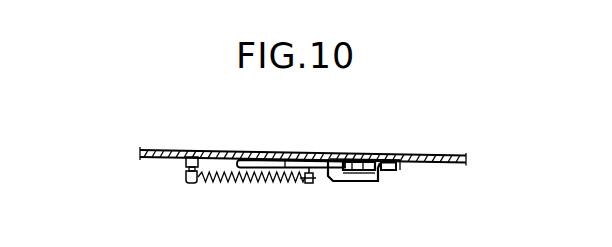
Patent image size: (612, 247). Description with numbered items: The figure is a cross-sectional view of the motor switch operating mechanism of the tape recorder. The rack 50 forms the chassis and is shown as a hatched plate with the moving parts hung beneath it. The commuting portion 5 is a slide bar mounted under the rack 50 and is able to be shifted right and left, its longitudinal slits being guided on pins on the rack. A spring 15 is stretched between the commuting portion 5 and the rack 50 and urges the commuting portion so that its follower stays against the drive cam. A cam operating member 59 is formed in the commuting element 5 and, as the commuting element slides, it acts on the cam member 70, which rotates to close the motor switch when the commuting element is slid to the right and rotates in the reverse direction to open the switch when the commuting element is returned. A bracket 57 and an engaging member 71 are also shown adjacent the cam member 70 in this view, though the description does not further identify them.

The commuting portion 5 is at (257, 160).
The spring 15 is at (257, 182).
The rack 50 is at (413, 157).
The bracket 57 is at (347, 182).
The cam operating member 59 is at (377, 156).
The cam member 70 is at (393, 174).
The engaging member 71 is at (360, 156).